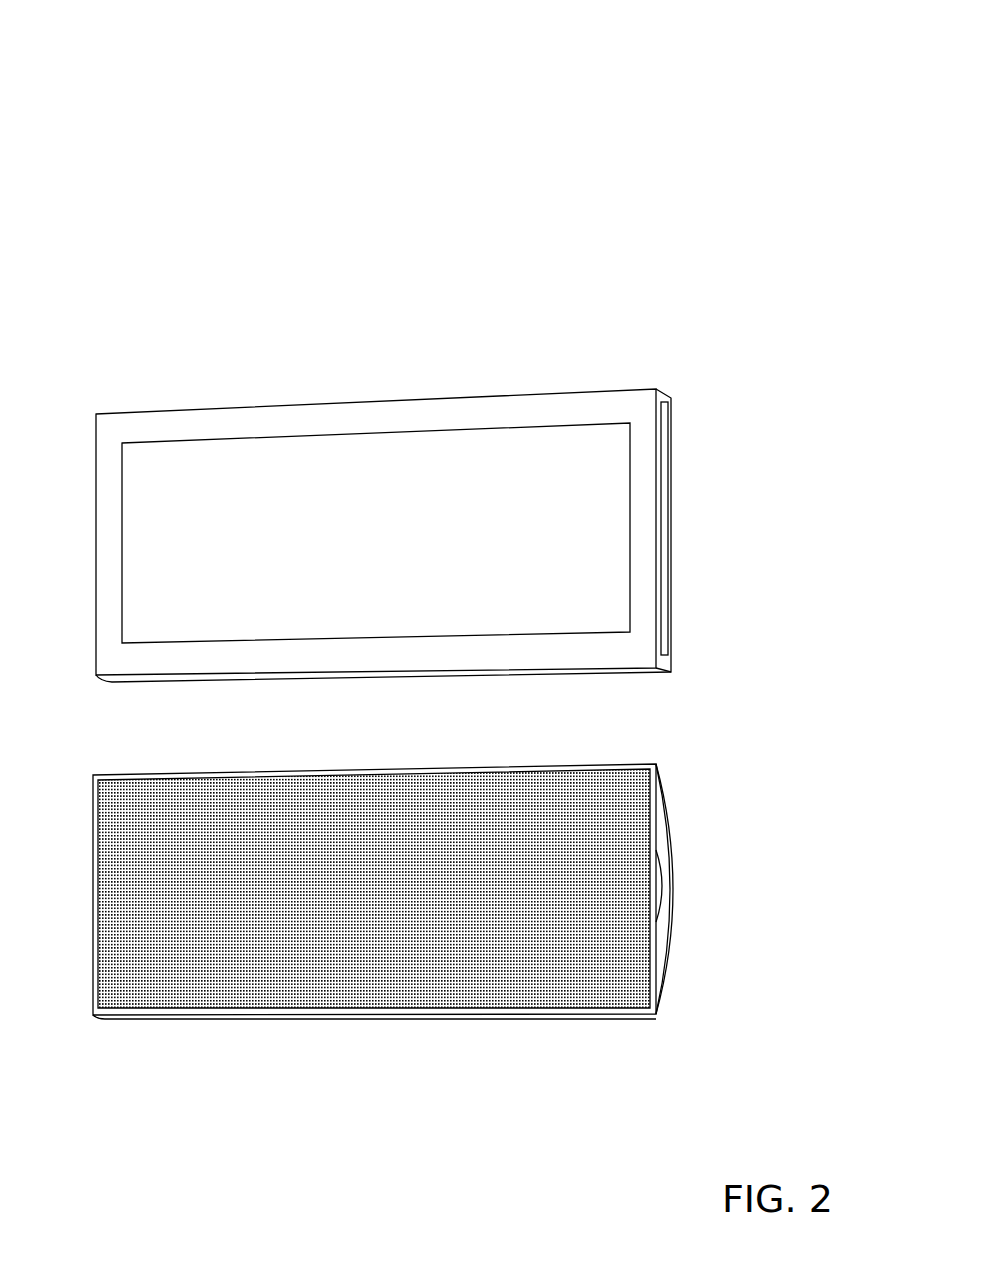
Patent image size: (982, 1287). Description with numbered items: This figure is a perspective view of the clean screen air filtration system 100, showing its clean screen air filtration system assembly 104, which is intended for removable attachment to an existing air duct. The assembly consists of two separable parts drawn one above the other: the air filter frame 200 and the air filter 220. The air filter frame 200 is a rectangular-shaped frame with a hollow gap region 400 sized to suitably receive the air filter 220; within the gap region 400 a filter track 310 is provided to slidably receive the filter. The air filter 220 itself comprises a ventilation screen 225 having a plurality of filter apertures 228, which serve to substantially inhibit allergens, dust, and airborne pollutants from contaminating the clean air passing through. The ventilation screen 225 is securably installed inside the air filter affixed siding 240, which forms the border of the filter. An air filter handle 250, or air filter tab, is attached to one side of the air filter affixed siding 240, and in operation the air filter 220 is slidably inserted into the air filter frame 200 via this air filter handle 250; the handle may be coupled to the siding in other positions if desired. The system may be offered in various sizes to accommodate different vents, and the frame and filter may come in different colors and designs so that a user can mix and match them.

The clean screen air filtration system 100 is at (551, 87).
The clean screen air filtration system assembly 104 is at (598, 128).
The air filter frame 200 is at (446, 411).
The filter track 310 is at (629, 646).
The gap region 400 is at (673, 473).
The air filter affixed siding 240 is at (322, 770).
The filter apertures 228 is at (514, 790).
The ventilation screen 225 is at (393, 898).
The air filter 220 is at (676, 983).
The air filter handle 250 is at (662, 832).